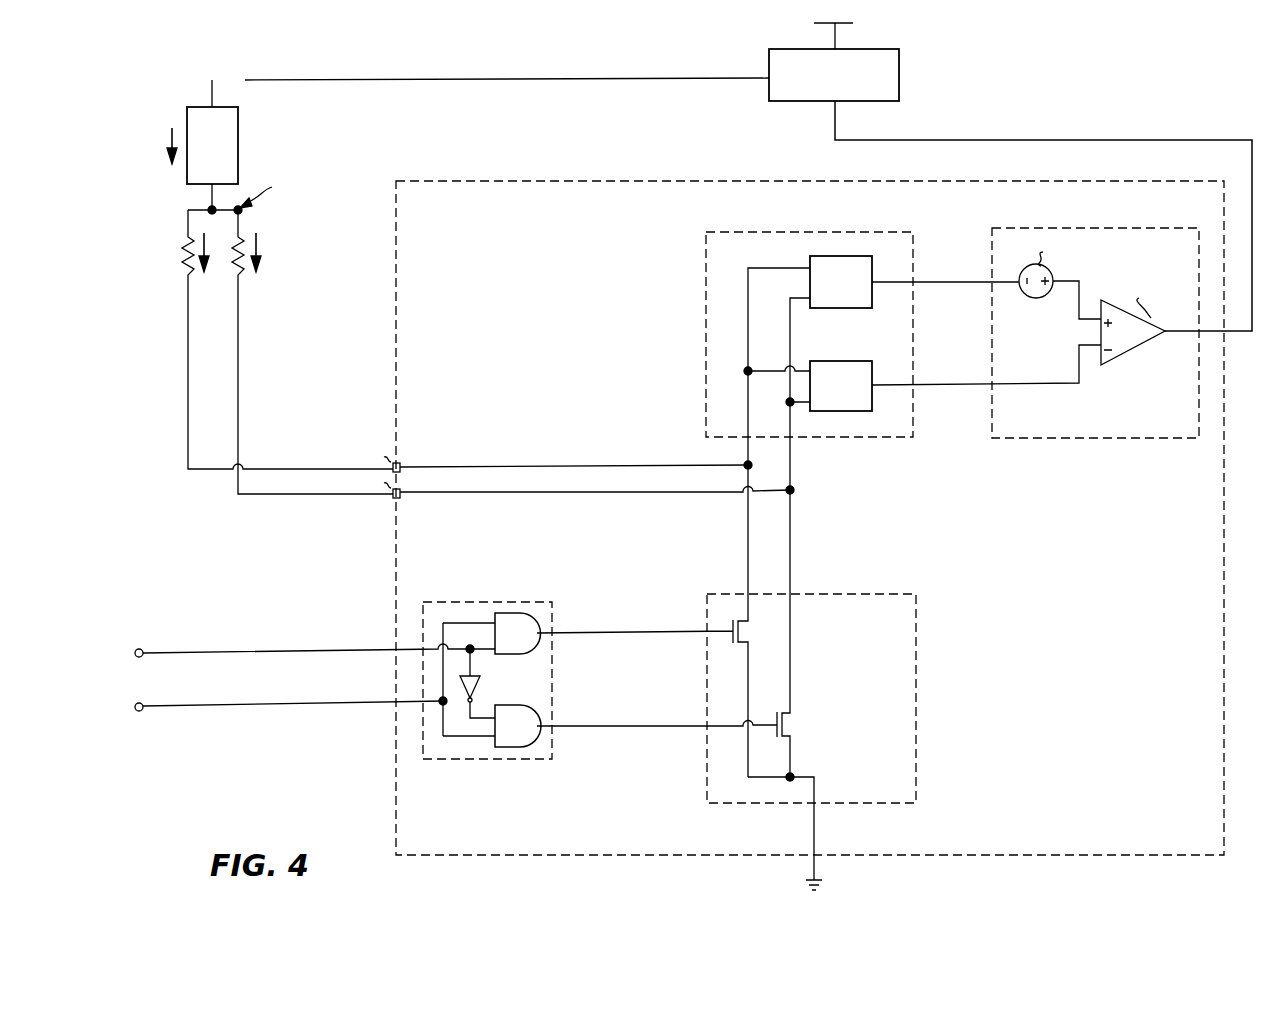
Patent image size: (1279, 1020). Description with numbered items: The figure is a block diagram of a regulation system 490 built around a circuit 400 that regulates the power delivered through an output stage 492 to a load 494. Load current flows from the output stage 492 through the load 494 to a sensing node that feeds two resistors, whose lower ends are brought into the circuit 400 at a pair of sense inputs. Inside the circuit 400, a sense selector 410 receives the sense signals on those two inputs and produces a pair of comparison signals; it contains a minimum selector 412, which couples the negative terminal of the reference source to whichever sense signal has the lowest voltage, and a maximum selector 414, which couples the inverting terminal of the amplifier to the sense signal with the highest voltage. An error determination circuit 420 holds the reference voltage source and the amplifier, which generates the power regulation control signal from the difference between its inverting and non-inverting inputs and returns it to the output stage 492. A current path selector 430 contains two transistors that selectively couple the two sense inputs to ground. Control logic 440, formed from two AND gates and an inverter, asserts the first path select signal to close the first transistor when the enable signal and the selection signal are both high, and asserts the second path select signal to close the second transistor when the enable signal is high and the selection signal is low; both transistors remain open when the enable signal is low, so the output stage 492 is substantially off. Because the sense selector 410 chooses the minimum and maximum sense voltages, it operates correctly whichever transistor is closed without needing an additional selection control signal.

The circuit 400 is at (581, 181).
The sense selector 410 is at (814, 232).
The minimum selector 412 is at (872, 258).
The maximum selector 414 is at (872, 364).
The error determination circuit 420 is at (1099, 228).
The current path selector 430 is at (917, 701).
The control logic 440 is at (512, 602).
The regulation system 490 is at (1010, 95).
The output stage 492 is at (899, 74).
The load 494 is at (238, 145).